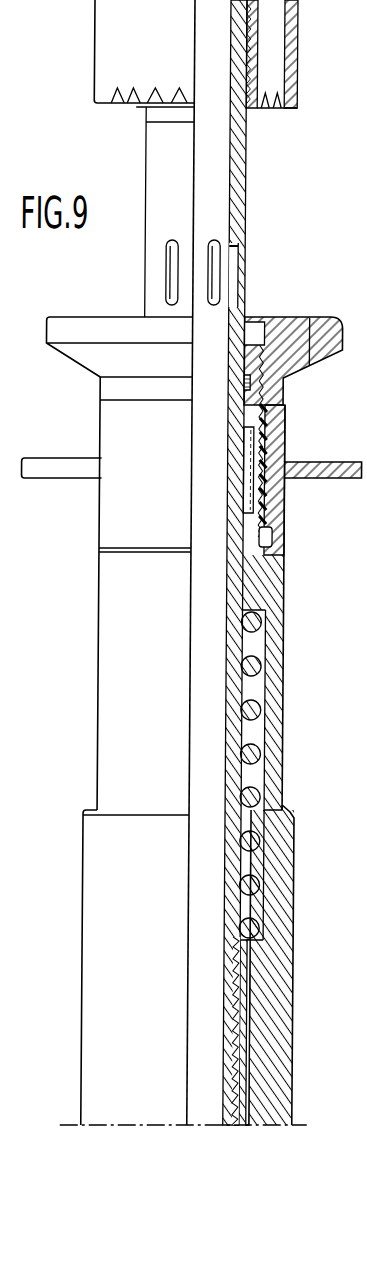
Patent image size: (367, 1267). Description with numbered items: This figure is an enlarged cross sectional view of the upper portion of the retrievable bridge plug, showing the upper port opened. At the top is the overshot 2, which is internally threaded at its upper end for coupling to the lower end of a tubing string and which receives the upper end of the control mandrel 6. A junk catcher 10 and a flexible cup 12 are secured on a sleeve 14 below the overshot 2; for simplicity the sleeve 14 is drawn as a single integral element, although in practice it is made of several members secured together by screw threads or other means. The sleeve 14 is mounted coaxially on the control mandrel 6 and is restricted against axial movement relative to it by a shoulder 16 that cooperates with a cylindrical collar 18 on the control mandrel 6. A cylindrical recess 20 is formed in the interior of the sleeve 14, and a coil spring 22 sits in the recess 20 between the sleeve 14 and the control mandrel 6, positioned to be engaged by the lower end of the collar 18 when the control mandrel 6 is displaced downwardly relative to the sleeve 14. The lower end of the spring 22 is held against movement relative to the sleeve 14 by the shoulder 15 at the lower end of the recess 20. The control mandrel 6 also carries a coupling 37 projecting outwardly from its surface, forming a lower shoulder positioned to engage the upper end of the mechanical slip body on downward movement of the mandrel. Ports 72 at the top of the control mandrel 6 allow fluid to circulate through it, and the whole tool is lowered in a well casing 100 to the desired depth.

The overshot 2 is at (110, 28).
The control mandrel 6 is at (241, 194).
The junk catcher 10 is at (86, 356).
The flexible cup 12 is at (70, 462).
The sleeve 14 is at (98, 855).
The shoulder 15 is at (262, 942).
The shoulder 16 is at (284, 424).
The cylindrical collar 18 is at (243, 450).
The cylindrical recess 20 is at (263, 772).
The coil spring 22 is at (264, 662).
The coupling 37 is at (250, 1042).
The ports 72 is at (228, 241).
The well casing 100 is at (366, 953).